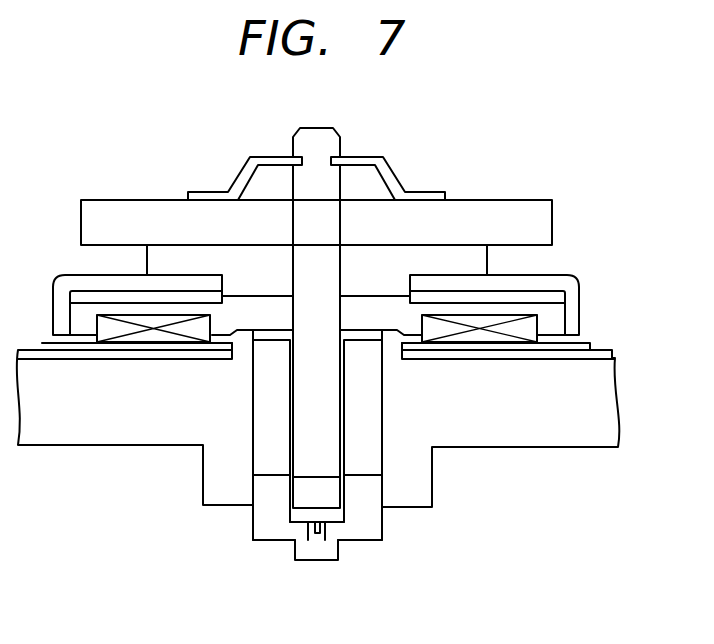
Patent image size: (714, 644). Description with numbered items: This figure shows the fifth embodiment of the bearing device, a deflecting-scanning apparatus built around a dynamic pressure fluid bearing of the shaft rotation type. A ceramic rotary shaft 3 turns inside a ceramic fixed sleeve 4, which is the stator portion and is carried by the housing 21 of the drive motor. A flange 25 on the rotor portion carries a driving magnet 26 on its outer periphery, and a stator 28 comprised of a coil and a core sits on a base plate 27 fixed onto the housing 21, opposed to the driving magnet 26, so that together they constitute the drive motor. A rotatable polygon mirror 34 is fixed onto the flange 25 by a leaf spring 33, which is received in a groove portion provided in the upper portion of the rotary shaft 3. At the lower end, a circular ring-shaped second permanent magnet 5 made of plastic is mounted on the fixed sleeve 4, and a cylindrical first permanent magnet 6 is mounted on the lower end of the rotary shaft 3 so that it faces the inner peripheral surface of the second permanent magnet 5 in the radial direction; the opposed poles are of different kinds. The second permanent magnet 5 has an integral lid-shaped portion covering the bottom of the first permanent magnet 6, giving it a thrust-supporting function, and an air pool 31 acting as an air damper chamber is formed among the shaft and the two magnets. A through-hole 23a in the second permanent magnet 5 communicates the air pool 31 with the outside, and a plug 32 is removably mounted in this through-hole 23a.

The rotary shaft 3 is at (318, 140).
The fixed sleeve 4 is at (262, 430).
The second permanent magnet 5 is at (367, 527).
The first permanent magnet 6 is at (315, 505).
The housing 21 is at (575, 435).
The through-hole 23a is at (313, 537).
The flange 25 is at (475, 261).
The driving magnet 26 is at (557, 297).
The base plate 27 is at (575, 348).
The stator 28 is at (527, 325).
The air pool 31 is at (330, 518).
The plug 32 is at (327, 553).
The leaf spring 33 is at (390, 180).
The rotatable polygon mirror 34 is at (539, 226).